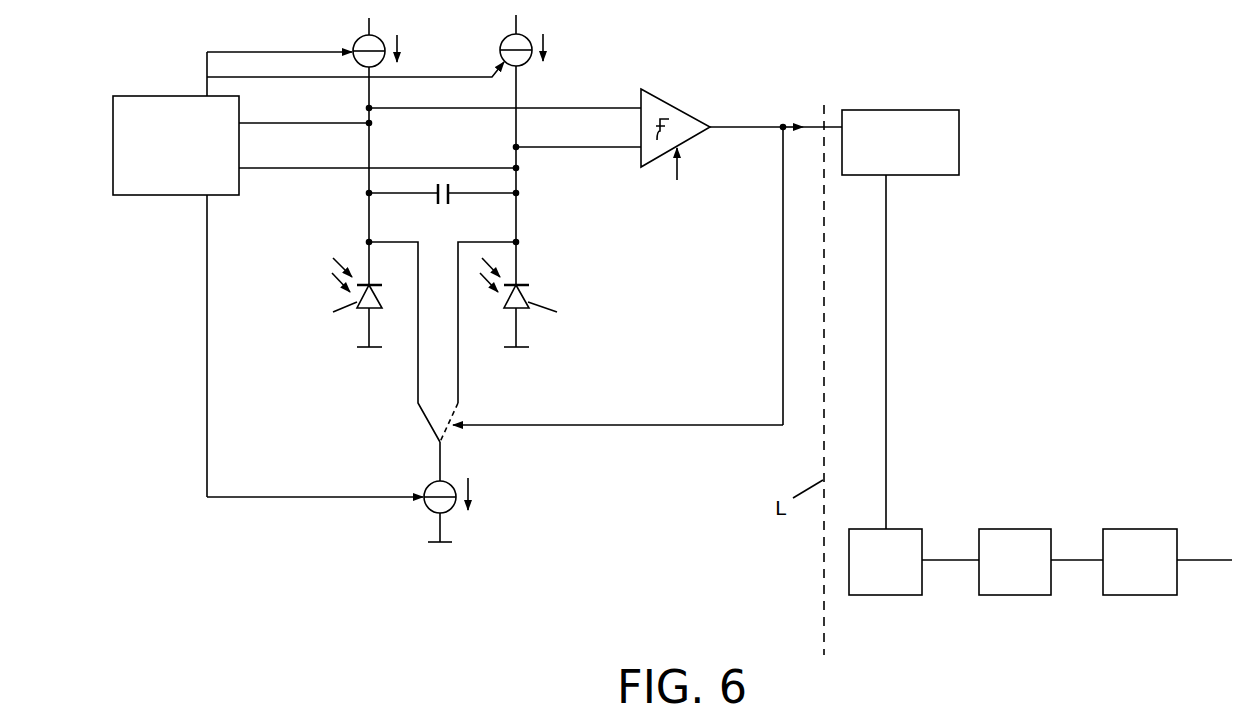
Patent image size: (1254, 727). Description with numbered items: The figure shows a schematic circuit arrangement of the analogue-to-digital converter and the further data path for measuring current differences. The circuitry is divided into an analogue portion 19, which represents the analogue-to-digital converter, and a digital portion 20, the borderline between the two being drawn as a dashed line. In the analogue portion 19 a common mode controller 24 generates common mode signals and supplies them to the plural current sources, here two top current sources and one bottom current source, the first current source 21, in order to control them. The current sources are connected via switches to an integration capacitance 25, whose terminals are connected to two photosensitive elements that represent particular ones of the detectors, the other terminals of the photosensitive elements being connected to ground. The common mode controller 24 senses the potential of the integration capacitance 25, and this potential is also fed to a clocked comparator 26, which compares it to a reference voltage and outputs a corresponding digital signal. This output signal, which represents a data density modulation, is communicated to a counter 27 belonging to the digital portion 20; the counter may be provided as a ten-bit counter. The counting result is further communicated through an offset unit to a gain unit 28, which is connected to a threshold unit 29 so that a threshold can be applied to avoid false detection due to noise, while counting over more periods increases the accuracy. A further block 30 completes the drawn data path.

The analogue portion 19 is at (575, 542).
The digital portion 20 is at (1037, 615).
The first current source 21 is at (422, 508).
The common mode controller 24 is at (153, 198).
The integration capacitance 25 is at (437, 198).
The clocked comparator 26 is at (670, 102).
The counter 27 is at (877, 108).
The gain unit 28 is at (903, 528).
The threshold unit 29 is at (1023, 528).
The processing block 30 is at (1150, 528).